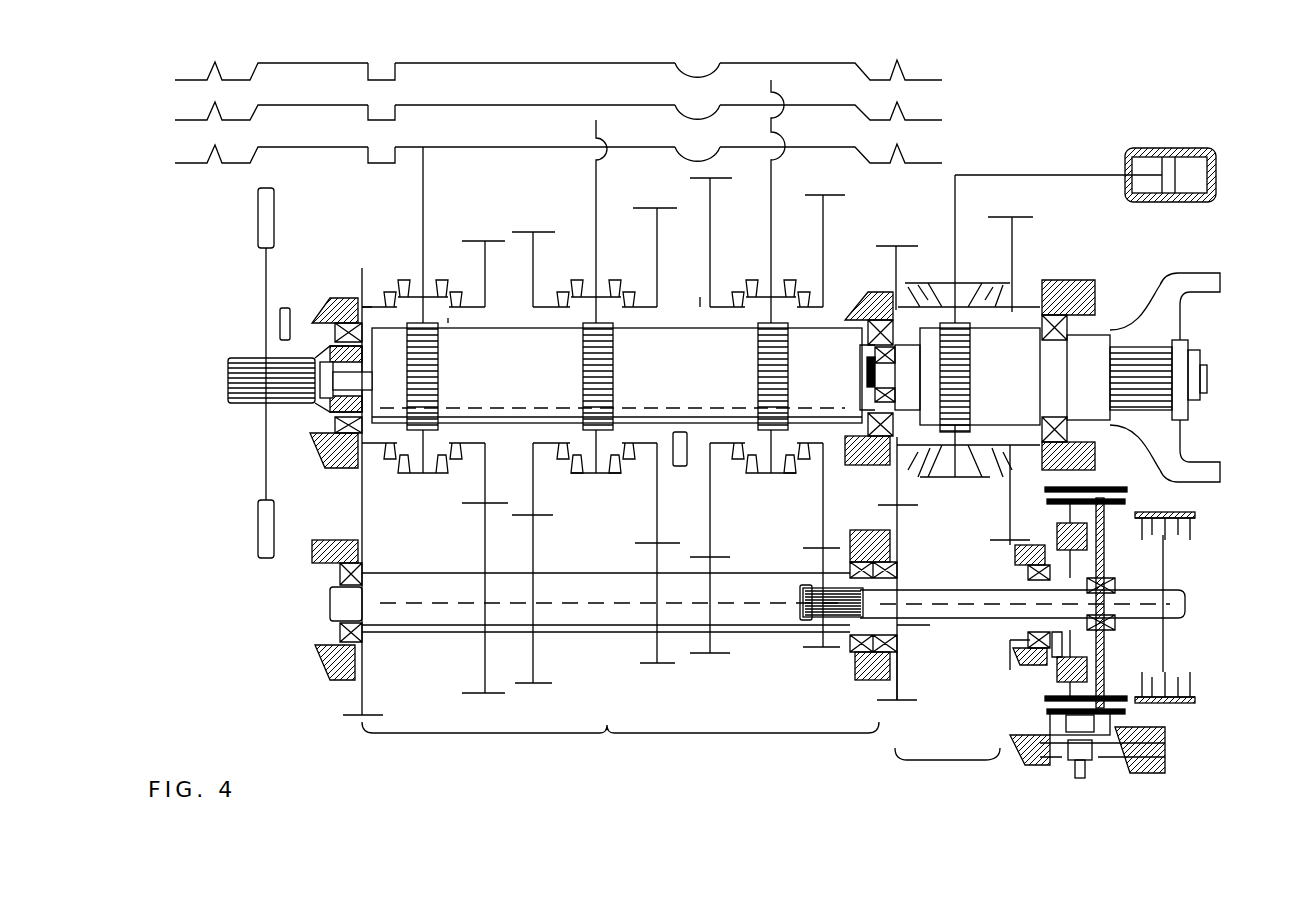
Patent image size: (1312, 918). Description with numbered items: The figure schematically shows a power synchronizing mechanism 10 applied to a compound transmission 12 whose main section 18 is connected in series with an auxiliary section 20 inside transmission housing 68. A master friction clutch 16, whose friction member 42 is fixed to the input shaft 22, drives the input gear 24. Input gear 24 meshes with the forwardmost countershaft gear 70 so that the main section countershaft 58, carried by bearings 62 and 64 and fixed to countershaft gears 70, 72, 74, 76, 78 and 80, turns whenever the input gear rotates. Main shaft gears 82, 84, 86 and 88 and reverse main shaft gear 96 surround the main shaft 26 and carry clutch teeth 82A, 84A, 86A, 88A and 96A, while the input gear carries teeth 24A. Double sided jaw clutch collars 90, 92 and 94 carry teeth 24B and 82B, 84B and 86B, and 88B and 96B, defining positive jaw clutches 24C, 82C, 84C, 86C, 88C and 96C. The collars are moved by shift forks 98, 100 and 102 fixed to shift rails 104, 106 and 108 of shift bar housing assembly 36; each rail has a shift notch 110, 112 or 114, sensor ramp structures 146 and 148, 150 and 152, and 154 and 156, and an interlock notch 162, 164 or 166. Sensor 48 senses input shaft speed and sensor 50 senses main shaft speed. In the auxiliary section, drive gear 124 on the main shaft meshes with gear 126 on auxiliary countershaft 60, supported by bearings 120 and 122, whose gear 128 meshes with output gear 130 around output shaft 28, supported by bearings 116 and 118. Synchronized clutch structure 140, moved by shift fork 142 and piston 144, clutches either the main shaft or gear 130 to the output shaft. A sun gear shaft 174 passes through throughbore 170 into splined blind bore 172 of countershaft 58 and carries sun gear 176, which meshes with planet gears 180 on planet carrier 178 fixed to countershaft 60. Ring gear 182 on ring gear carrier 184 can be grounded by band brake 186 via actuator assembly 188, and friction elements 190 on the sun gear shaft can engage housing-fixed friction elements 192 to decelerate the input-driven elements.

The power synchronizing mechanism 10 is at (1238, 578).
The compound transmission 12 is at (996, 125).
The master friction clutch 16 is at (1058, 342).
The main transmission section 18 is at (620, 749).
The auxiliary transmission section 20 is at (965, 765).
The input shaft 22 is at (240, 386).
The input gear 24 is at (355, 478).
The jaw clutch teeth 24A is at (395, 470).
The jaw clutch teeth 24B is at (410, 290).
The positive jaw clutch 24C is at (400, 288).
The main shaft 26 is at (617, 375).
The output shaft 28 is at (1007, 375).
The shift bar housing assembly 36 is at (975, 61).
The second friction member 42 is at (276, 215).
The sensor 48 is at (290, 322).
The sensor 50 is at (688, 470).
The main section countershaft 58 is at (628, 578).
The auxiliary section countershaft 60 is at (937, 565).
The bearing 62 is at (340, 570).
The bearing 64 is at (875, 668).
The transmission housing 68 is at (325, 672).
The countershaft gear 70 is at (370, 692).
The countershaft gear 72 is at (485, 662).
The countershaft gear 74 is at (540, 650).
The countershaft gear 76 is at (648, 656).
The countershaft gear 78 is at (710, 570).
The countershaft gear 80 is at (820, 640).
The main shaft gear 82 is at (470, 318).
The jaw clutch teeth 82A is at (452, 480).
The jaw clutch teeth 82B is at (432, 453).
The positive jaw clutch 82C is at (447, 318).
The main shaft gear 84 is at (533, 478).
The jaw clutch teeth 84A is at (566, 445).
The jaw clutch teeth 84B is at (578, 480).
The positive jaw clutch 84C is at (575, 470).
The main shaft gear 86 is at (668, 315).
The jaw clutch teeth 86A is at (628, 450).
The jaw clutch teeth 86B is at (612, 472).
The positive jaw clutch 86C is at (612, 293).
The main shaft gear 88 is at (715, 318).
The jaw clutch teeth 88A is at (738, 450).
The jaw clutch teeth 88B is at (752, 475).
The positive jaw clutch 88C is at (760, 320).
The jaw clutch collar 90 is at (432, 295).
The jaw clutch collar 92 is at (558, 293).
The jaw clutch collar 94 is at (748, 293).
The reverse main shaft gear 96 is at (800, 270).
The jaw clutch teeth 96A is at (802, 300).
The jaw clutch teeth 96B is at (788, 478).
The positive jaw clutch 96C is at (805, 445).
The shift fork 98 is at (438, 172).
The shift fork 100 is at (608, 172).
The shift fork 102 is at (771, 190).
The shift rail 104 is at (522, 147).
The shift rail 106 is at (553, 90).
The shift rail 108 is at (553, 48).
The shift notch 110 is at (392, 157).
The shift notch 112 is at (392, 114).
The shift notch 114 is at (392, 72).
The bearing 116 is at (862, 368).
The bearing 118 is at (890, 377).
The bearing 120 is at (897, 660).
The bearing 122 is at (1010, 540).
The auxiliary section drive gear 124 is at (920, 225).
The auxiliary section countershaft gear 126 is at (897, 515).
The auxiliary section countershaft gear 128 is at (1030, 660).
The output gear 130 is at (1014, 250).
The synchronized clutch structure 140 is at (962, 282).
The auxiliary section shift fork 142 is at (957, 200).
The auxiliary section piston 144 is at (1192, 140).
The sensor ramp structure 146 is at (218, 145).
The sensor ramp structure 148 is at (900, 145).
The sensor ramp structure 150 is at (218, 102).
The sensor ramp structure 152 is at (900, 102).
The sensor ramp structure 154 is at (228, 60).
The sensor ramp structure 156 is at (900, 60).
The interlock notch 162 is at (700, 160).
The interlock notch 164 is at (700, 118).
The interlock notch 166 is at (700, 76).
The throughbore 170 is at (972, 588).
The blind bore 172 is at (812, 617).
The sun gear shaft 174 is at (920, 598).
The sun gear 176 is at (1070, 562).
The planet carrier 178 is at (1050, 668).
The planet gears 180 is at (1050, 720).
The ring gear 182 is at (1070, 475).
The ring gear carrier 184 is at (1090, 522).
The band brake 186 is at (1130, 712).
The band brake actuator assembly 188 is at (1118, 782).
The friction elements 190 is at (1196, 530).
The friction elements 192 is at (1196, 690).